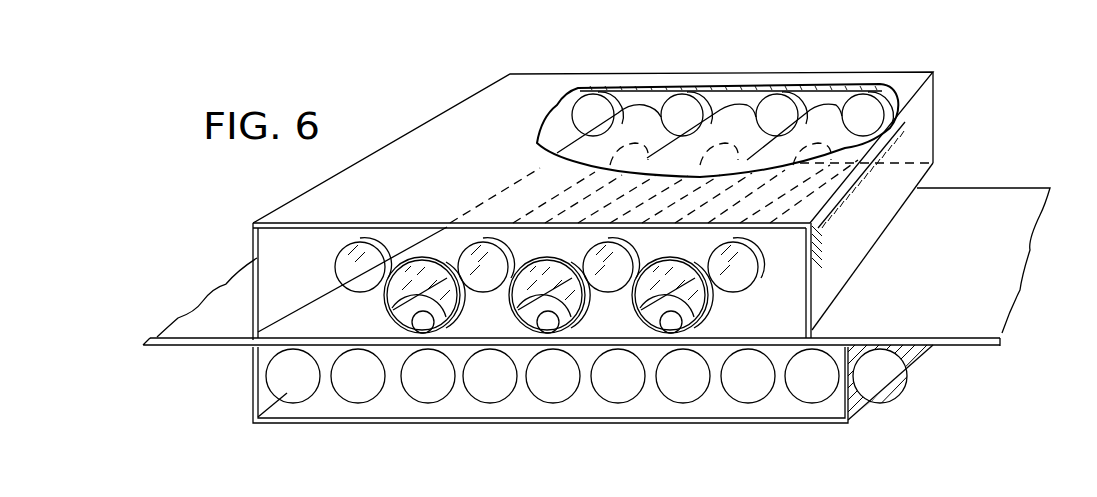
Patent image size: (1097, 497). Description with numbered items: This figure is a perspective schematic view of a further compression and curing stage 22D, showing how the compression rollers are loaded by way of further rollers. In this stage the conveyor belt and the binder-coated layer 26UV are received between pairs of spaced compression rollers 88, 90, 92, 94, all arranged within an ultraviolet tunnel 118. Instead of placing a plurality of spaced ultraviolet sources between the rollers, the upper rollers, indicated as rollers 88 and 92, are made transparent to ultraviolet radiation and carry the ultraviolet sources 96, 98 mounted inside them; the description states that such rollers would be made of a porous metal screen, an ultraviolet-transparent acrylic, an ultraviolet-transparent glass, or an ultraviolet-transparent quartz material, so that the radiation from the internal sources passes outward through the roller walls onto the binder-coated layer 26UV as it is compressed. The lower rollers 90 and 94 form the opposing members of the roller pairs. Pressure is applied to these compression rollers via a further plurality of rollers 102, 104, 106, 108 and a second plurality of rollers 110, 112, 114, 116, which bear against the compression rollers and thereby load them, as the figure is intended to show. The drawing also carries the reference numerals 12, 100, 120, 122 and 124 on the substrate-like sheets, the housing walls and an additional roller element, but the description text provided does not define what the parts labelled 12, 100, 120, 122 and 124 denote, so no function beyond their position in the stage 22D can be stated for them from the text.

The substrate 12 is at (1003, 345).
The compression and curing stage 22D is at (995, 92).
The binder-coated layer 26UV is at (997, 333).
The compression roller 88 is at (688, 309).
The compression roller 90 is at (674, 402).
The compression roller 92 is at (416, 358).
The compression roller 94 is at (418, 405).
The ultraviolet source 96 is at (690, 355).
The ultraviolet source 98 is at (450, 300).
The outer tube 100 is at (525, 300).
The further roller 102 is at (862, 105).
The further roller 104 is at (777, 103).
The further roller 106 is at (672, 103).
The further roller 108 is at (591, 104).
The further roller 110 is at (748, 287).
The further roller 112 is at (617, 292).
The further roller 114 is at (495, 292).
The further roller 116 is at (340, 266).
The ultraviolet tunnel 118 is at (935, 127).
The sheet 120 is at (890, 193).
The lower housing 122 is at (820, 331).
The sheet 124 is at (257, 337).